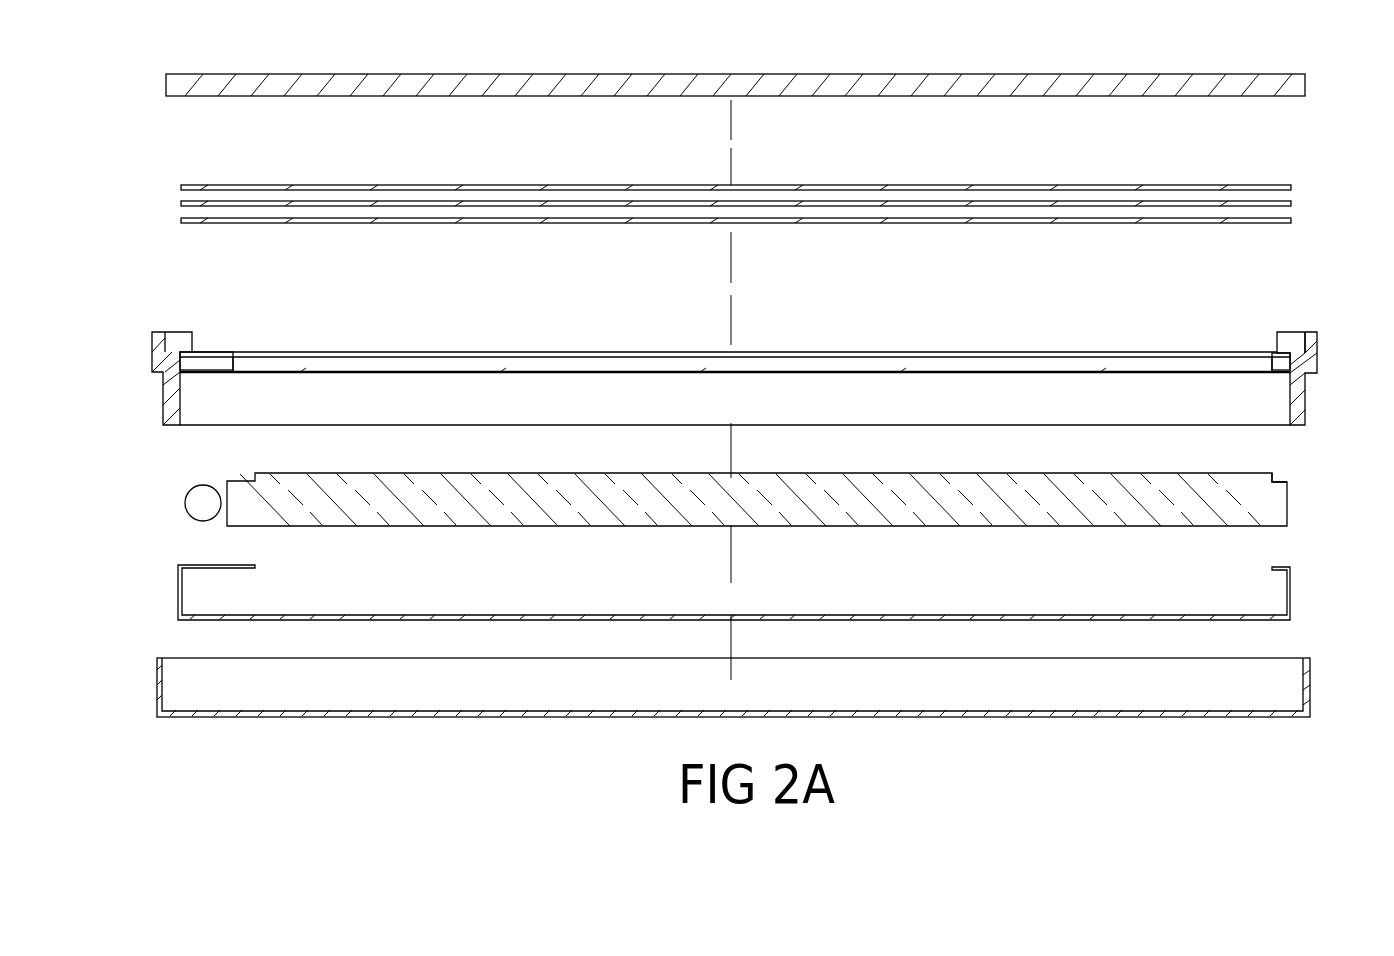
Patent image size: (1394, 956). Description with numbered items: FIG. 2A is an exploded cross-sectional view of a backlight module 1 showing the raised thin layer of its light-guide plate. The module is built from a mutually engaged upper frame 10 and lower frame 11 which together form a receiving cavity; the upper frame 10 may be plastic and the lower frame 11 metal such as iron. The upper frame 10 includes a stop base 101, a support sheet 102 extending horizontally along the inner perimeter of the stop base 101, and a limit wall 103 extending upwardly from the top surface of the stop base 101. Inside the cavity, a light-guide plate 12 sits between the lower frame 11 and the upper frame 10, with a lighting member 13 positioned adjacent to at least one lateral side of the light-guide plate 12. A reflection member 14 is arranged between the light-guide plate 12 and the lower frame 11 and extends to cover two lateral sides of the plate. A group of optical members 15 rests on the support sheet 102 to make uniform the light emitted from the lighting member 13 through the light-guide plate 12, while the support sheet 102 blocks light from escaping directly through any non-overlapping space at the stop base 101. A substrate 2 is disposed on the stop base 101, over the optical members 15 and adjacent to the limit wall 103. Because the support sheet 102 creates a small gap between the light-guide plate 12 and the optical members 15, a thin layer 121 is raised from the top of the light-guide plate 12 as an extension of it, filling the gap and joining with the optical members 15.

The backlight module 1 is at (113, 183).
The substrate 2 is at (1307, 86).
The upper frame 10 is at (772, 335).
The stop base 101 is at (1298, 350).
The support sheet 102 is at (1258, 368).
The limit wall 103 is at (1283, 337).
The lower frame 11 is at (1312, 685).
The light-guide plate 12 is at (807, 479).
The thin layer 121 is at (1272, 475).
The lighting member 13 is at (186, 502).
The reflection member 14 is at (1292, 603).
The optical members 15 is at (1303, 185).